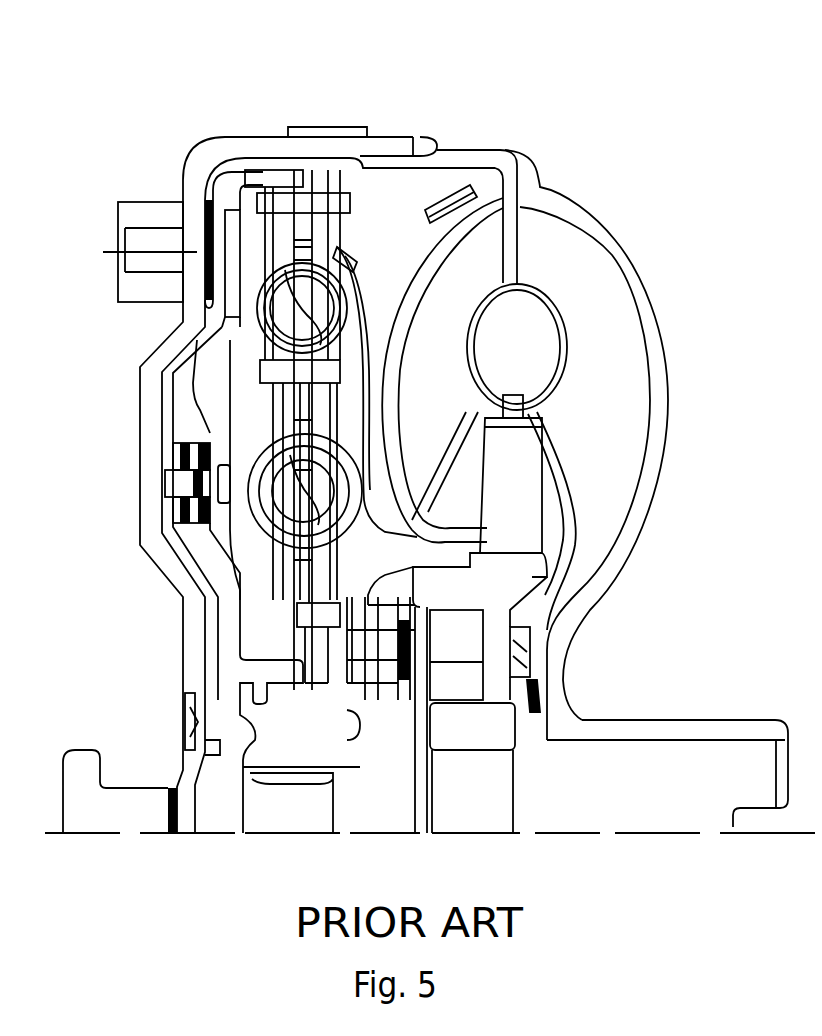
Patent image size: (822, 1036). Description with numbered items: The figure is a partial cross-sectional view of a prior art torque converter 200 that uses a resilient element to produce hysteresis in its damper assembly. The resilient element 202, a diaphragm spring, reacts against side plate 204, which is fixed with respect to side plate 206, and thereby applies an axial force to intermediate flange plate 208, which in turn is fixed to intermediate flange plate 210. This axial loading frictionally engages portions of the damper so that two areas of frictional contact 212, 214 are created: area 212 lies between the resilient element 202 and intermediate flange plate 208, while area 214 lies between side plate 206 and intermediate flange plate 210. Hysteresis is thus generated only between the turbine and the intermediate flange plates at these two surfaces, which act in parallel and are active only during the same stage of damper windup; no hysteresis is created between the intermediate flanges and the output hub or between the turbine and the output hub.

The torque converter 200 is at (628, 82).
The resilient element 202 is at (360, 578).
The side plate 204 is at (372, 337).
The side plate 206 is at (267, 187).
The intermediate flange plate 208 is at (332, 412).
The intermediate flange plate 210 is at (325, 413).
The area of frictional contact 212 is at (360, 582).
The area of frictional contact 214 is at (250, 338).